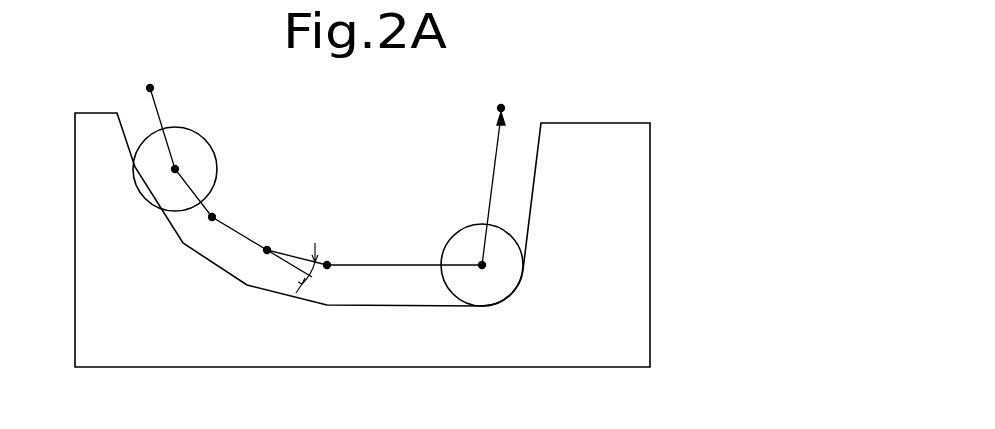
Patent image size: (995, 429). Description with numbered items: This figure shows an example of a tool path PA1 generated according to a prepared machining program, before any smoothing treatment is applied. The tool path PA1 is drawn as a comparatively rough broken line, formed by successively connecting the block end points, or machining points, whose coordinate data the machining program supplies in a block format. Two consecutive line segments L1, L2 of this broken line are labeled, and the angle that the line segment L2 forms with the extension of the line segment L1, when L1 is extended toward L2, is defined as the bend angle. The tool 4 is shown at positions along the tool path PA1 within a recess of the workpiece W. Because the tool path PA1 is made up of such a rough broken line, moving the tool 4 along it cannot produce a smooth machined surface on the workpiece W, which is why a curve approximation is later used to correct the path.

The tool 4 is at (217, 137).
The line segment L1 is at (237, 227).
The line segment L2 is at (294, 256).
The tool path PA1 is at (497, 142).
The workpiece W is at (652, 233).